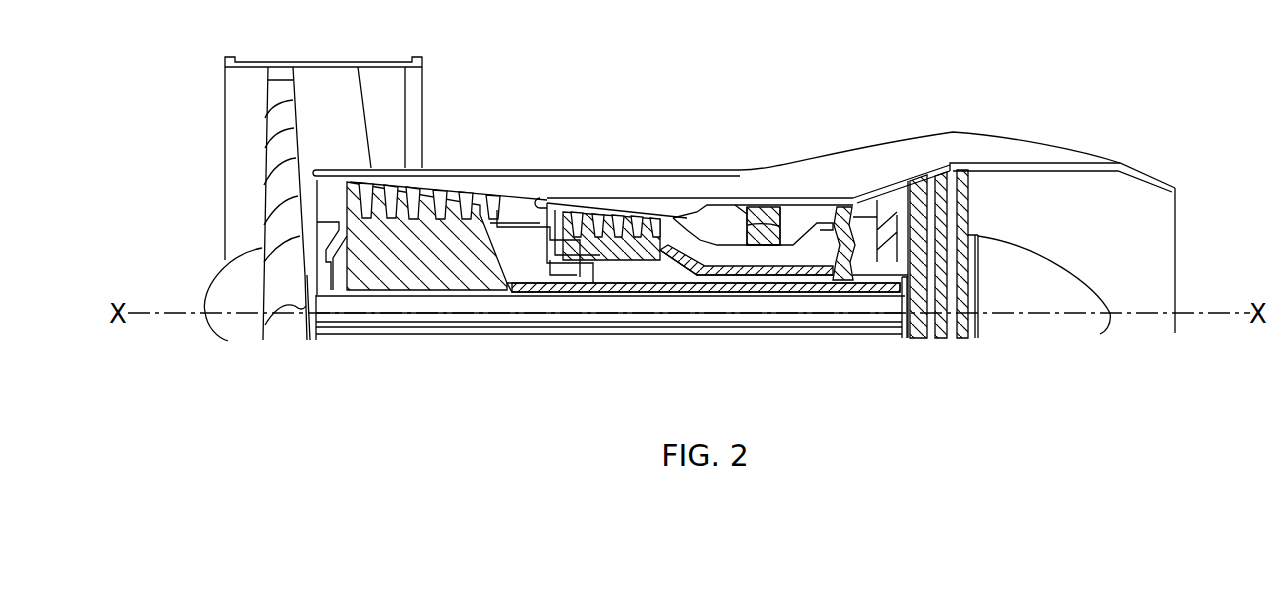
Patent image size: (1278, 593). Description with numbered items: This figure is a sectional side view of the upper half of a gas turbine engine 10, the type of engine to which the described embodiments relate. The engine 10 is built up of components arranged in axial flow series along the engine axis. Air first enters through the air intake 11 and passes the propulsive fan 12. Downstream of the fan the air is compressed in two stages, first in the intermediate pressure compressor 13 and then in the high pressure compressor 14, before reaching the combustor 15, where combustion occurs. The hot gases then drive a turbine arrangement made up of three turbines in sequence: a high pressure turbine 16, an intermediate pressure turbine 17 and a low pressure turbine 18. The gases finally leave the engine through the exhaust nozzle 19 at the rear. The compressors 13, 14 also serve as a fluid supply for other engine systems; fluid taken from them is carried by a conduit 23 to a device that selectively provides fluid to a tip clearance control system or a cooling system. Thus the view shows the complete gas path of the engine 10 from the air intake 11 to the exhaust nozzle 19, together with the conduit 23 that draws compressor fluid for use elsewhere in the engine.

The gas turbine engine 10 is at (592, 88).
The air intake 11 is at (200, 181).
The propulsive fan 12 is at (292, 92).
The intermediate pressure compressor 13 is at (425, 232).
The high pressure compressor 14 is at (617, 215).
The combustor 15 is at (769, 186).
The high pressure turbine 16 is at (843, 217).
The intermediate pressure turbine 17 is at (887, 197).
The low pressure turbine 18 is at (962, 200).
The exhaust nozzle 19 is at (1162, 262).
The conduit 23 is at (727, 198).